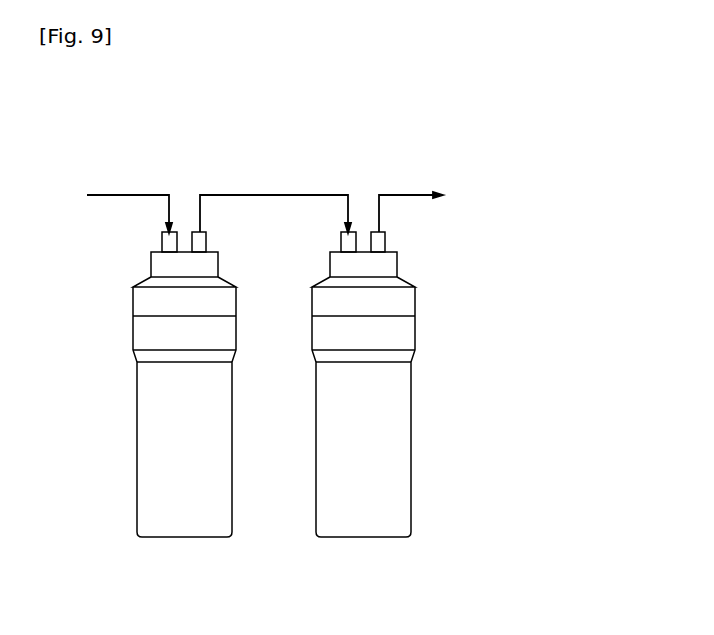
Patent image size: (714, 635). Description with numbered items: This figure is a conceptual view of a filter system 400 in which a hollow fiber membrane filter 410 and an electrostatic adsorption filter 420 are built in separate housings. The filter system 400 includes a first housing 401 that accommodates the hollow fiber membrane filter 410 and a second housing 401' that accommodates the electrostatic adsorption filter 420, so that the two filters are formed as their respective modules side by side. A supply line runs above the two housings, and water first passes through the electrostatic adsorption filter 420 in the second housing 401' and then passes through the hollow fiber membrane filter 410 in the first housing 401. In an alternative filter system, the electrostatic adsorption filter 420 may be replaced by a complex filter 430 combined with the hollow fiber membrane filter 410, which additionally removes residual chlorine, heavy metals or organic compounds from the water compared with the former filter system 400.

The filter system 400 is at (422, 148).
The hollow fiber membrane filter 410 is at (363, 417).
The electrostatic adsorption filter 420 is at (184, 417).
The complex filter 430 is at (184, 384).
The first housing 401 is at (363, 482).
The second housing 401' is at (184, 482).